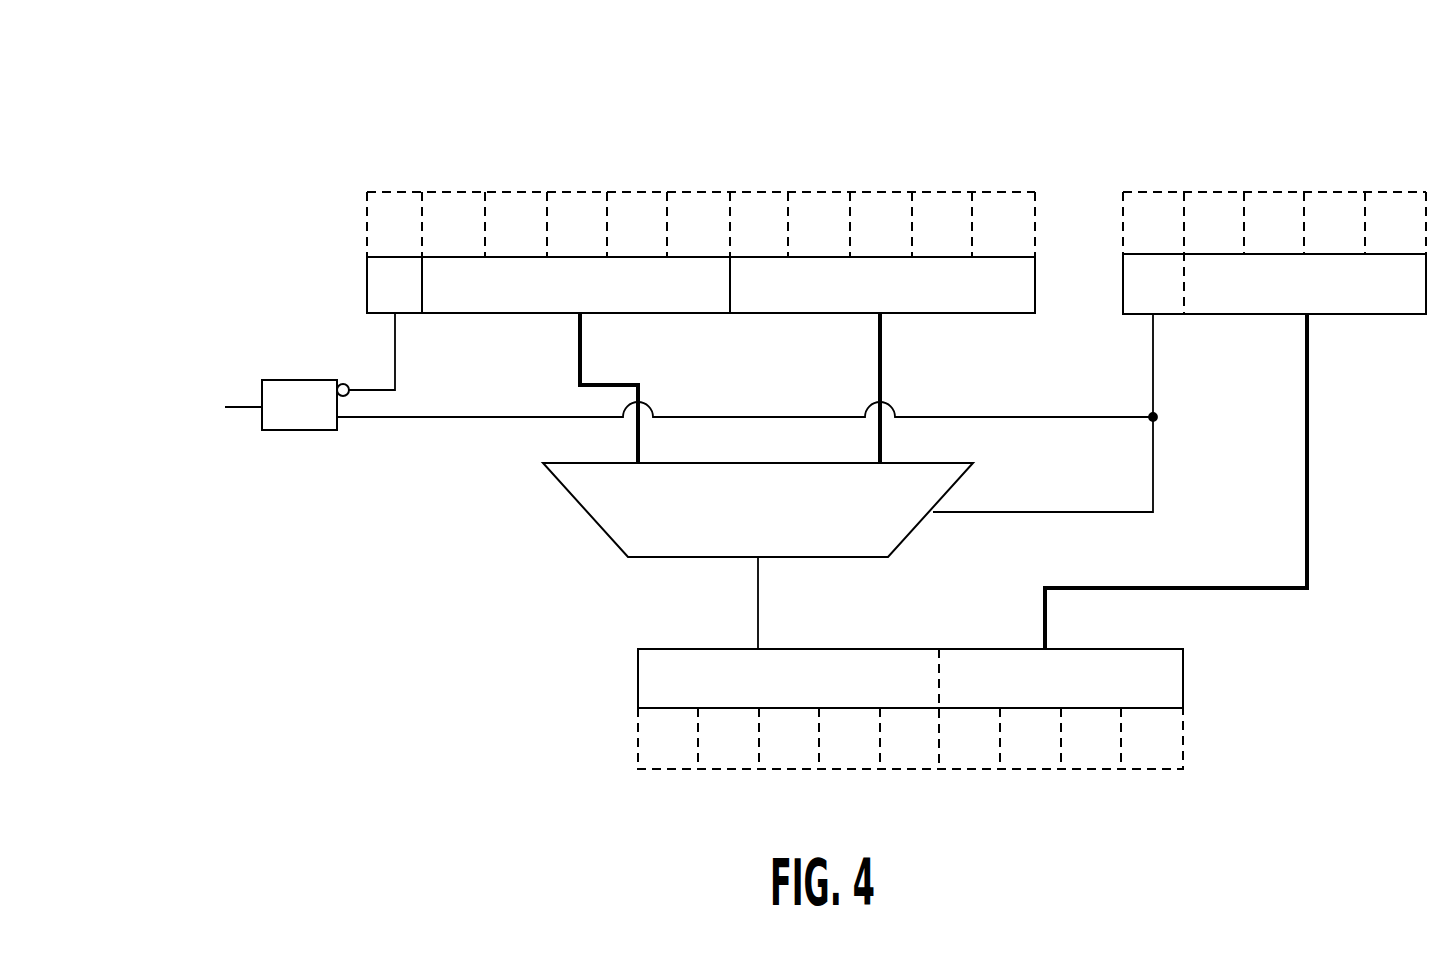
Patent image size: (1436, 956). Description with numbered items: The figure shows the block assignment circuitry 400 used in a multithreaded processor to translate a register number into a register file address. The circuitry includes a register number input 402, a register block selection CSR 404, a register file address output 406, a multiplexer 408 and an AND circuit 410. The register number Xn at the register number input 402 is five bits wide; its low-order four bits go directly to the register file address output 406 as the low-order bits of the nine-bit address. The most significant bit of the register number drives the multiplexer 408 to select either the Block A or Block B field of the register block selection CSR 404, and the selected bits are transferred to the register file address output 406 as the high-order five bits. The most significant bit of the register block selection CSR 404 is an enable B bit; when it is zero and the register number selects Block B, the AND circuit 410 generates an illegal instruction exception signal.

The block assignment circuitry 400 is at (1371, 126).
The register number input 402 is at (1352, 315).
The register block selection CSR 404 is at (960, 313).
The register file address output 406 is at (1183, 680).
The multiplexer 408 is at (833, 557).
The AND circuit 410 is at (300, 430).